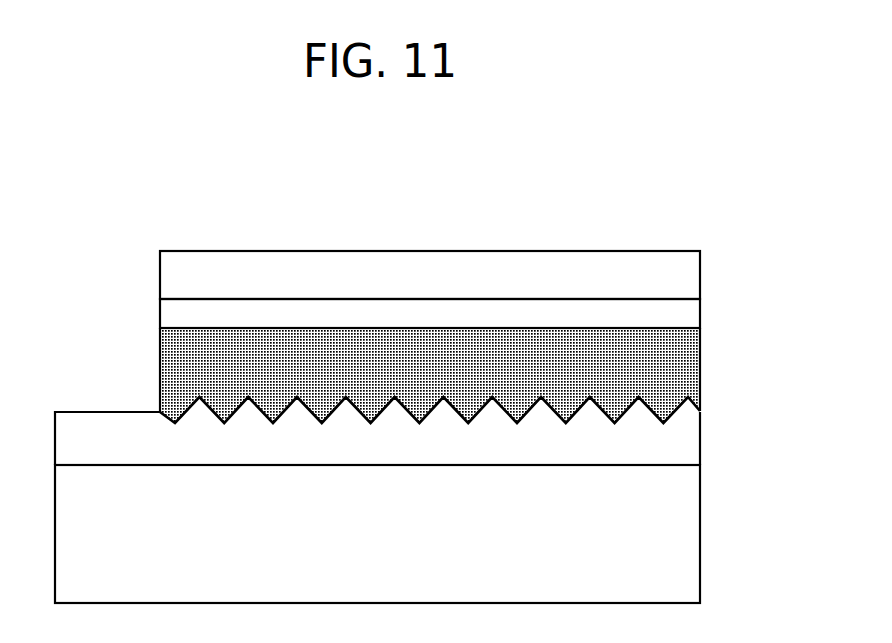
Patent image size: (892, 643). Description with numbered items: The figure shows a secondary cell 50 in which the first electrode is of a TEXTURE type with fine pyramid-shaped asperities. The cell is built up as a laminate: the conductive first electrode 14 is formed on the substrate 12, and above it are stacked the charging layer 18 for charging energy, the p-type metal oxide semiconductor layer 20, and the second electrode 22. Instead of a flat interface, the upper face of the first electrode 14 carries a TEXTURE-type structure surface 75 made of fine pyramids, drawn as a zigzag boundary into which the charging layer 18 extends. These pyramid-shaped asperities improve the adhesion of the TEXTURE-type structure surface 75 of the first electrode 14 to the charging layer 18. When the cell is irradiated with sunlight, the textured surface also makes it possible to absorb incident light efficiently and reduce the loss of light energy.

The secondary cell 50 is at (254, 214).
The substrate 12 is at (675, 533).
The first electrode 14 is at (675, 450).
The charging layer 18 is at (463, 375).
The p-type metal oxide semiconductor layer 20 is at (675, 314).
The second electrode 22 is at (675, 272).
The TEXTURE-type structure surface 75 is at (677, 413).